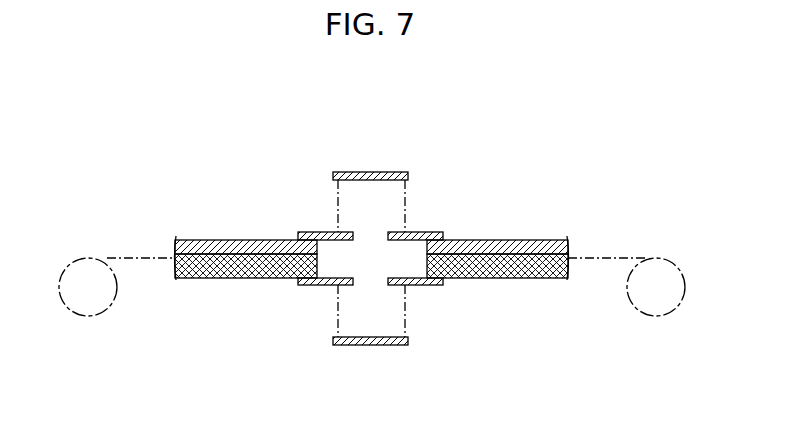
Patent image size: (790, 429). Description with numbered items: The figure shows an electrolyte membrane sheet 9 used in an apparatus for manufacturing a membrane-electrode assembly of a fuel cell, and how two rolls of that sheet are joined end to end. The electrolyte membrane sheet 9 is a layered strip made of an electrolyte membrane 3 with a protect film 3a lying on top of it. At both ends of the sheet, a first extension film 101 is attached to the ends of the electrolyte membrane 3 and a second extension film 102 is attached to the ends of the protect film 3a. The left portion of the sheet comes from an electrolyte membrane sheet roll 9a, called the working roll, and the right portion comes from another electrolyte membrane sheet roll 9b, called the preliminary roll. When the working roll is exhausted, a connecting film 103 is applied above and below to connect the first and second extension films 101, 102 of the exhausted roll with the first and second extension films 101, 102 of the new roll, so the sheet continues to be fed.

The electrolyte membrane sheet 9 is at (372, 248).
The electrolyte membrane sheet roll 9a is at (100, 316).
The another electrolyte membrane sheet roll 9b is at (643, 316).
The electrolyte membrane 3 is at (247, 278).
The protect film 3a is at (247, 240).
The first extension film 101 is at (302, 285).
The second extension film 102 is at (301, 232).
The connecting film 103 is at (370, 172).